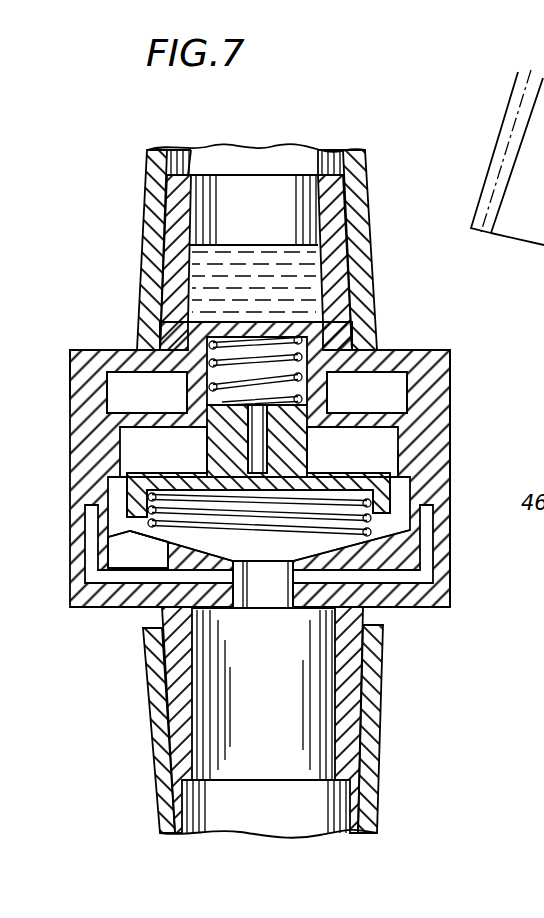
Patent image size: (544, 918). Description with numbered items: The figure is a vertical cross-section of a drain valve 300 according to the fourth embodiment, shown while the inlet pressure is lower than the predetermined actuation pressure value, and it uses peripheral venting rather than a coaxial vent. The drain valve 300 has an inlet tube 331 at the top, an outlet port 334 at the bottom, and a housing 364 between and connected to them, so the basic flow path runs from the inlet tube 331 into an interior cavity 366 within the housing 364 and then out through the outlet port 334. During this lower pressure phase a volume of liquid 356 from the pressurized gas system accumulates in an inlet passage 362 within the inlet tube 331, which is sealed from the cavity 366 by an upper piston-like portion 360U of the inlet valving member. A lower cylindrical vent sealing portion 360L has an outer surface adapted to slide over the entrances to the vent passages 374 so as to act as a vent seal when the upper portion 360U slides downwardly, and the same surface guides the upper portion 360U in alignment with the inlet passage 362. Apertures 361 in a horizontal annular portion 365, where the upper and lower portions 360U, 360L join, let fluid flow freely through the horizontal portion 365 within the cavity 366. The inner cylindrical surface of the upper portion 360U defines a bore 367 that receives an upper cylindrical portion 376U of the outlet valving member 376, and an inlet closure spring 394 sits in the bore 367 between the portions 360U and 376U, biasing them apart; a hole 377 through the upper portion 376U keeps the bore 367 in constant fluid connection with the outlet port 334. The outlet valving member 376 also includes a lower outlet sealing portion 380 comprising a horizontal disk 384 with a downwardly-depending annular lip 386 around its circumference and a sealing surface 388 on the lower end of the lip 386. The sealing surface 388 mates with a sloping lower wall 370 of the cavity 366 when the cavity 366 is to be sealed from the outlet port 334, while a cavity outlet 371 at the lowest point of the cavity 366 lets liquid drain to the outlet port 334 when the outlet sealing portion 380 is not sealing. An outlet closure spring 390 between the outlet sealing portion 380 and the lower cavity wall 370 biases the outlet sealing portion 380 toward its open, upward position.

The drain valve 300 is at (60, 194).
The inlet tube 331 is at (162, 216).
The outlet port 334 is at (178, 696).
The volume of liquid 356 is at (246, 240).
The upper piston-like portion of the inlet valving member 360U is at (175, 348).
The lower cylindrical vent sealing portion of the inlet valving member 360L is at (412, 434).
The apertures 361 is at (150, 420).
The inlet passage 362 is at (318, 209).
The housing 364 is at (67, 357).
The horizontal annular portion of the inlet valving member 365 is at (374, 357).
The interior cavity 366 is at (117, 396).
The bore 367 is at (323, 316).
The sloping lower wall of the cavity 370 is at (165, 534).
The cavity outlet 371 is at (260, 598).
The vent passages 374 is at (111, 604).
The outlet valving member 376 is at (390, 482).
The upper cylindrical portion of the outlet valving member 376U is at (293, 438).
The hole 377 is at (258, 458).
The outlet sealing portion 380 is at (127, 491).
The horizontal disk 384 is at (388, 450).
The annular lip 386 is at (395, 503).
The sealing surface 388 is at (415, 535).
The outlet closure spring 390 is at (108, 537).
The inlet closure spring 394 is at (266, 345).